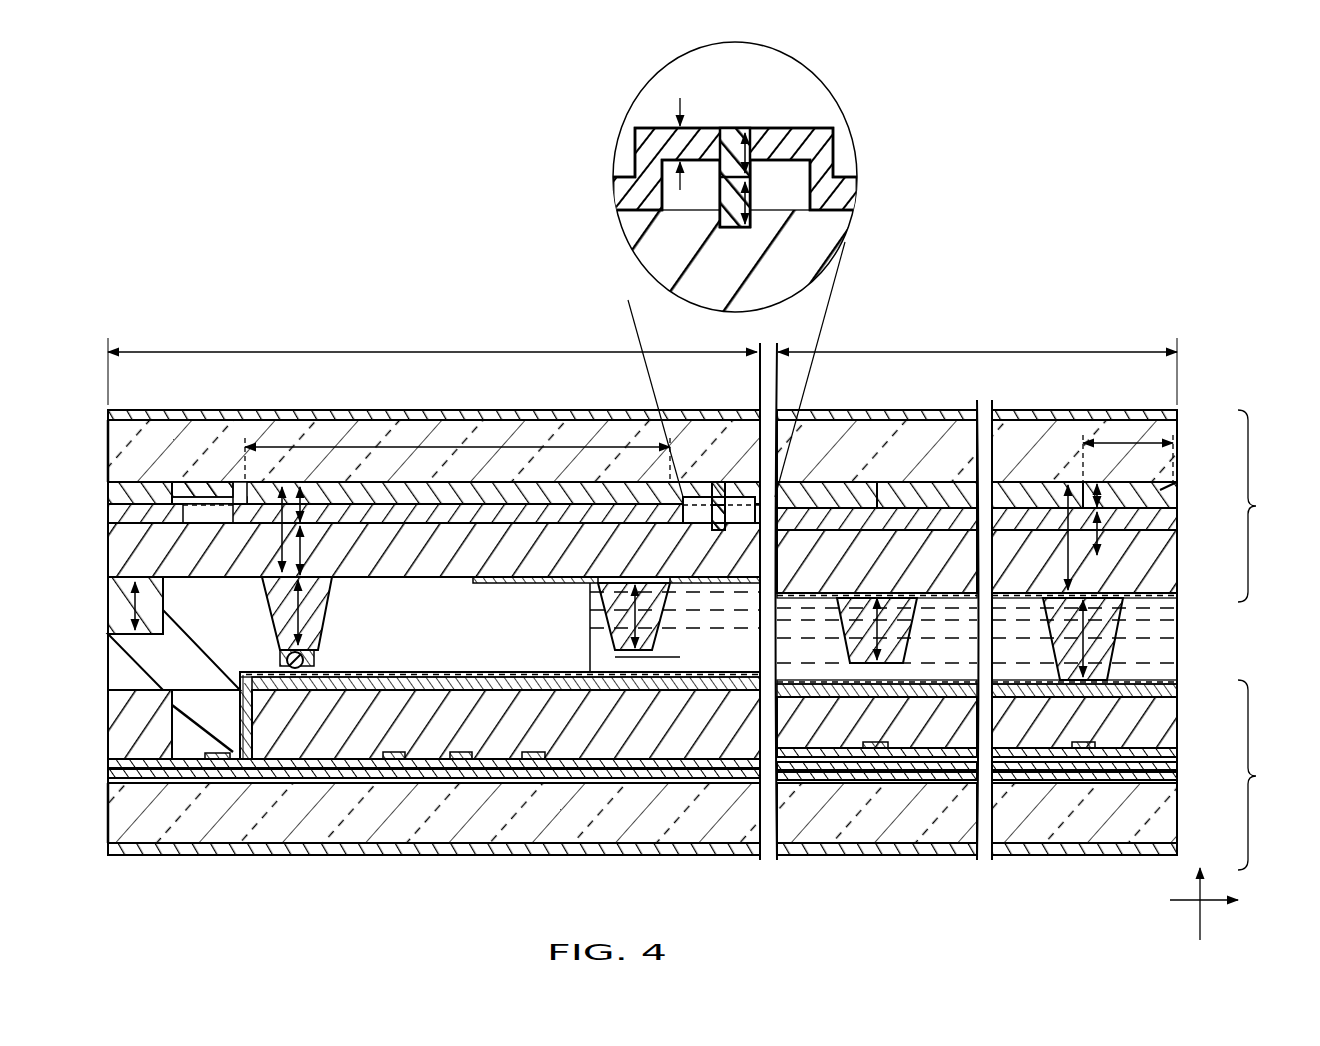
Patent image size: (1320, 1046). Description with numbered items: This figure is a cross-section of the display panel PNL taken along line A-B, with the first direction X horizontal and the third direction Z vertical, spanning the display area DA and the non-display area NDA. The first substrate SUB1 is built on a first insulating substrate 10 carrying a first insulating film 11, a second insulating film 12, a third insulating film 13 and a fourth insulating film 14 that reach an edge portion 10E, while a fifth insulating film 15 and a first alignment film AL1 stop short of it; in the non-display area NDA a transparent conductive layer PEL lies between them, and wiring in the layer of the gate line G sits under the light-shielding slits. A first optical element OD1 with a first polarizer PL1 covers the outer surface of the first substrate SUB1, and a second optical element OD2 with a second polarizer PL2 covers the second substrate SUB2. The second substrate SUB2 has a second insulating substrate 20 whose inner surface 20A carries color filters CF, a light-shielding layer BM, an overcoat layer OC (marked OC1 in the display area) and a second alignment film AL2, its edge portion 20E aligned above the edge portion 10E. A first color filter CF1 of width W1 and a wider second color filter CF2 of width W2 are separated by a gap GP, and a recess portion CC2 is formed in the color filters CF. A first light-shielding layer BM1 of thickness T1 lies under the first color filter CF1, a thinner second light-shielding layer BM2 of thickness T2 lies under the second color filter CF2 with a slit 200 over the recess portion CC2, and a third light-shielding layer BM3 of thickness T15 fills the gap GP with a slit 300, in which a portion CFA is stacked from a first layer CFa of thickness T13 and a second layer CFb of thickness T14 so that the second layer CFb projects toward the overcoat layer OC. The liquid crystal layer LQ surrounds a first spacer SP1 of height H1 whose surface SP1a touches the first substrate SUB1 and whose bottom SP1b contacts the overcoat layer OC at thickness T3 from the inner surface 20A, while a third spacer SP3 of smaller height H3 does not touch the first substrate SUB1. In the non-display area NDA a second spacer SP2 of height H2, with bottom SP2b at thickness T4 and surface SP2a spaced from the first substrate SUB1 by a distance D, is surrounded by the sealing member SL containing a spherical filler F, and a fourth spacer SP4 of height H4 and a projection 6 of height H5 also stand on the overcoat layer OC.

The second optical element OD2 is at (108, 412).
The second polarizer PL2 is at (56, 396).
The edge portion of second insulating substrate 20E is at (104, 445).
The second insulating substrate 20 is at (108, 462).
The color filters CF is at (108, 492).
The light-shielding layer BM is at (108, 515).
The overcoat layer OC is at (108, 552).
The projection 6 is at (108, 598).
The height of projection H5 is at (132, 608).
The sealing member SL is at (108, 672).
The fourth insulating film 14 is at (108, 726).
The third insulating film 13 is at (108, 761).
The second insulating film 12 is at (108, 770).
The first insulating film 11 is at (108, 780).
The edge portion of first insulating substrate 10E is at (104, 817).
The first insulating substrate 10 is at (108, 824).
The first optical element OD1 is at (108, 848).
The first polarizer PL1 is at (60, 877).
The slit 200 is at (212, 492).
The recess portion CC2 is at (204, 514).
The thickness from inner surface to second spacer bottom T4 is at (278, 540).
The thickness of second light-shielding layer T2 is at (306, 498).
The bottom surface of second spacer SP2b is at (308, 566).
The height of second spacer H2 is at (304, 612).
The second spacer SP2 is at (330, 626).
The first-substrate-side surface of second spacer SP2a is at (318, 658).
The distance D is at (286, 662).
The filler F is at (318, 648).
The transparent conductive layer PEL is at (420, 672).
The fifth insulating film 15 is at (493, 672).
The first alignment film AL1 is at (556, 672).
The second color filter CF2 is at (323, 495).
The second light-shielding layer BM2 is at (405, 515).
The width of second color filter W2 is at (540, 446).
The slit 300 is at (695, 498).
The first layer CFa is at (718, 485).
The third light-shielding layer BM3 is at (690, 500).
The gap GP is at (703, 514).
The second layer CFb is at (752, 522).
The portion of color filters CFA is at (728, 532).
The height of fourth spacer H4 is at (640, 615).
The fourth spacer SP4 is at (652, 640).
The height of third spacer H3 is at (882, 633).
The third spacer SP3 is at (903, 652).
The width of first color filter W1 is at (1128, 442).
The thickness of first light-shielding layer T1 is at (1102, 496).
The inner surface of second insulating substrate 20A is at (1165, 488).
The first color filter CF1 is at (1178, 500).
The first light-shielding layer BM1 is at (1178, 520).
The thickness from inner surface to first spacer bottom T3 is at (1066, 548).
The bottom surface of first spacer SP1b is at (1092, 585).
The overcoat layer OC1 is at (1178, 564).
The second alignment film AL2 is at (1178, 596).
The height of first spacer H1 is at (1088, 637).
The liquid crystal layer LQ is at (1178, 646).
The first spacer SP1 is at (1102, 660).
The first-substrate-side surface of first spacer SP1a is at (1093, 688).
The gate line G is at (1178, 767).
The first substrate SUB1 is at (1279, 775).
The second substrate SUB2 is at (1279, 506).
The display panel PNL is at (1203, 294).
The non-display area NDA is at (432, 328).
The display area DA is at (977, 328).
The section line end A is at (105, 359).
The section line end B is at (1175, 359).
The thickness of third light-shielding layer T15 is at (663, 150).
The thickness of first layer T13 is at (748, 150).
The thickness of second layer T14 is at (748, 200).
The third direction Z is at (1199, 887).
The first direction X is at (1215, 902).